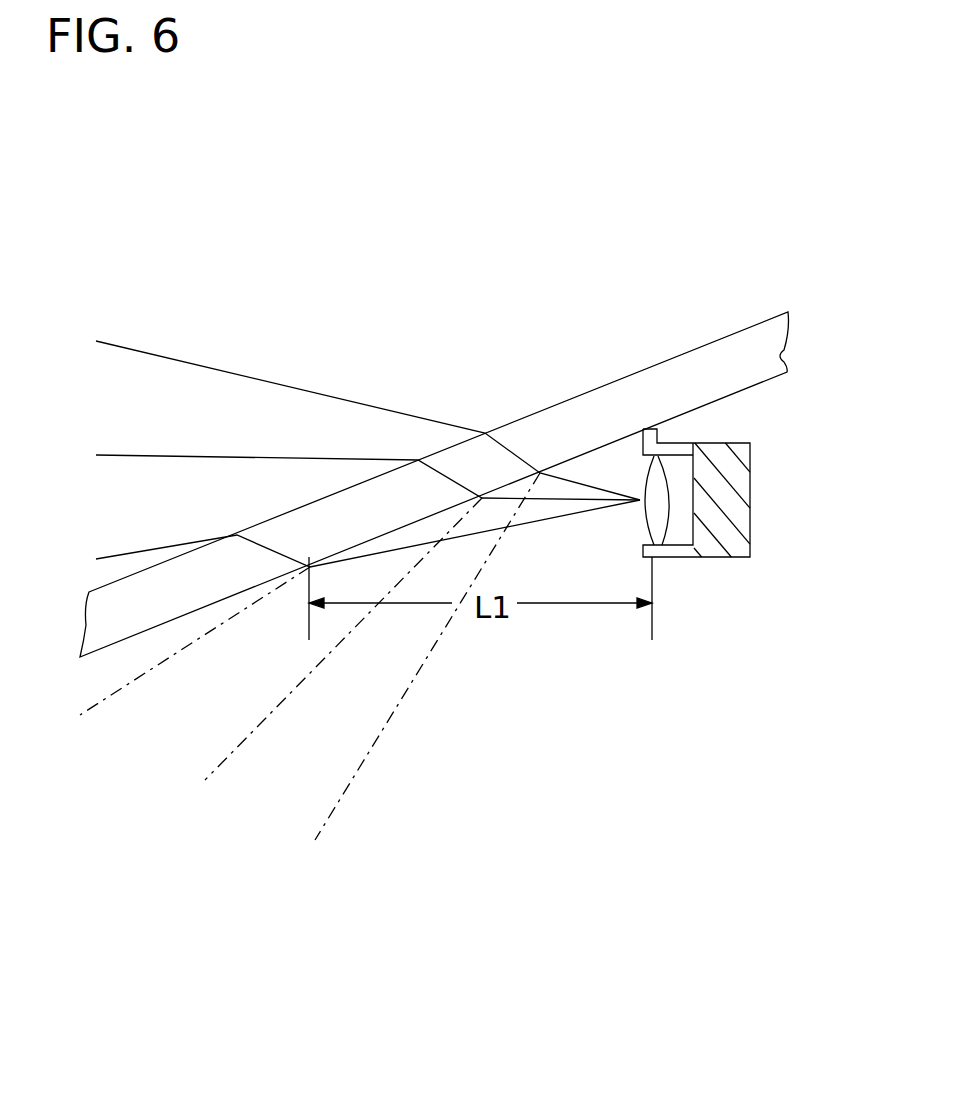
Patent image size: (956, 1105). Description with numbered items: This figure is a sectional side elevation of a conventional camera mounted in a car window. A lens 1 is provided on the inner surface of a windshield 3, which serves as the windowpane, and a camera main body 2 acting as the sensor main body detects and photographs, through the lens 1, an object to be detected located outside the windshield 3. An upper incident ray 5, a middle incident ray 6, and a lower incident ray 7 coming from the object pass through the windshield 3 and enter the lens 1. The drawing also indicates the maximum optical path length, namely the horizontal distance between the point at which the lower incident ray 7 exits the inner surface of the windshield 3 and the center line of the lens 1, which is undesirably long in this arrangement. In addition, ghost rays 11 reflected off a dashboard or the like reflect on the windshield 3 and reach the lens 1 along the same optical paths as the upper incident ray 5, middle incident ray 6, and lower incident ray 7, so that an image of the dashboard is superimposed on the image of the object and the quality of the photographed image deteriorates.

The lens 1 is at (668, 547).
The camera main body 2 is at (748, 523).
The windshield 3 is at (695, 349).
The upper incident ray 5 is at (333, 398).
The middle incident ray 6 is at (247, 457).
The lower incident ray 7 is at (155, 547).
The ghost rays 11 is at (118, 690).